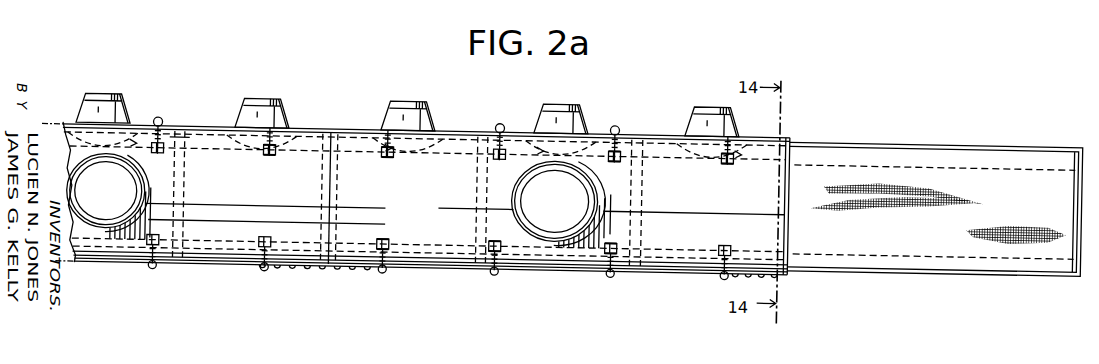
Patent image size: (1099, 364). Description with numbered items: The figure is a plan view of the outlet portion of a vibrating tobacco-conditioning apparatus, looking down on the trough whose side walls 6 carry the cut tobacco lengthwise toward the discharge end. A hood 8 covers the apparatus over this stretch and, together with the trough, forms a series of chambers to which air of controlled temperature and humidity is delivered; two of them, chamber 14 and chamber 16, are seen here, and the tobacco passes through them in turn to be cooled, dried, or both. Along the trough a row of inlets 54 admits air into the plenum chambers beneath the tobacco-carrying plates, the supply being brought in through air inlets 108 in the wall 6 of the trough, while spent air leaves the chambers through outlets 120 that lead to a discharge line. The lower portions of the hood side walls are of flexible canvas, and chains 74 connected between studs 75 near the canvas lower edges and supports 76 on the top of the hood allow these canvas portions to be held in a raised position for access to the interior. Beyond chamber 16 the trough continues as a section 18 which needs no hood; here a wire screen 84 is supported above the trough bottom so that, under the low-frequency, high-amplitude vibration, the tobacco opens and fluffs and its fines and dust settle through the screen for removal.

The side walls 6 is at (335, 124).
The hood 8 is at (447, 163).
The chamber 14 is at (207, 194).
The chamber 16 is at (404, 198).
The section 18 is at (911, 221).
The inlet 54 is at (107, 93).
The chains 74 is at (293, 102).
The studs 75 is at (162, 123).
The supports 76 is at (274, 153).
The wire screen 84 is at (1030, 207).
The air inlets 108 is at (124, 118).
The outlets 120 is at (109, 199).